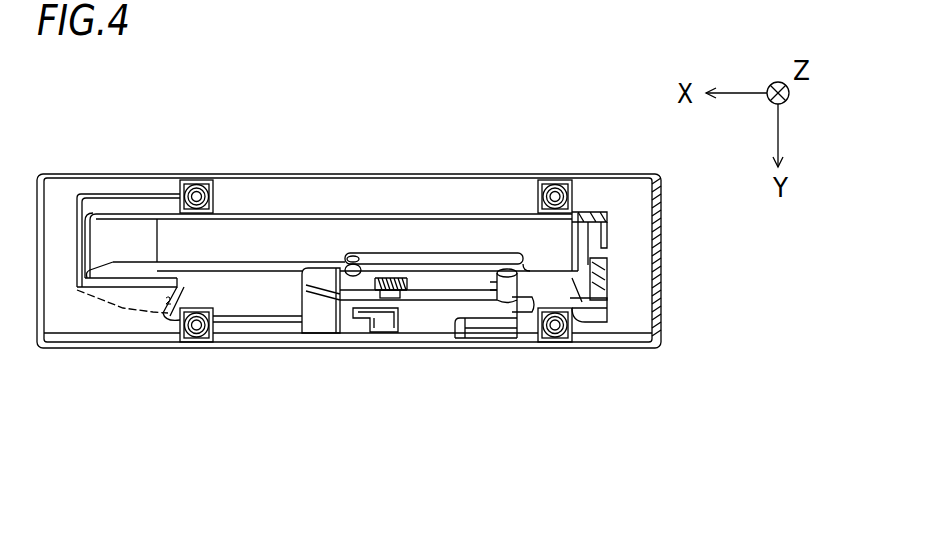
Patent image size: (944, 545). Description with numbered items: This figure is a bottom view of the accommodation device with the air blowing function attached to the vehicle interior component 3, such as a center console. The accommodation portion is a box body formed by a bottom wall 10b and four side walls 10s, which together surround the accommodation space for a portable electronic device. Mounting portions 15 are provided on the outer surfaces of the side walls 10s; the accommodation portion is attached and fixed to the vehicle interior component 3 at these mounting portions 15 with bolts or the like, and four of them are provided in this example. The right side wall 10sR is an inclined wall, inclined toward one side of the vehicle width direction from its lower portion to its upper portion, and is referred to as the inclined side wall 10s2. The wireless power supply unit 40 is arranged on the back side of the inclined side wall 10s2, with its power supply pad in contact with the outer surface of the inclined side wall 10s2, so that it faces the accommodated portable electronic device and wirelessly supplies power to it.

The vehicle interior component 3 is at (385, 190).
The mounting portion 15 is at (176, 198).
The bottom wall 10b is at (268, 237).
The right side wall 10sR is at (255, 300).
The side wall 10s is at (212, 339).
The inclined side wall 10s2 is at (212, 339).
The wireless power supply unit 40 is at (428, 320).